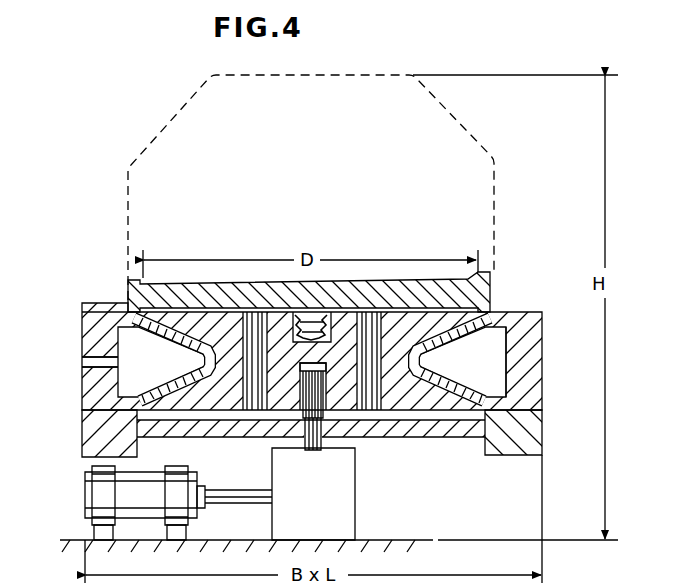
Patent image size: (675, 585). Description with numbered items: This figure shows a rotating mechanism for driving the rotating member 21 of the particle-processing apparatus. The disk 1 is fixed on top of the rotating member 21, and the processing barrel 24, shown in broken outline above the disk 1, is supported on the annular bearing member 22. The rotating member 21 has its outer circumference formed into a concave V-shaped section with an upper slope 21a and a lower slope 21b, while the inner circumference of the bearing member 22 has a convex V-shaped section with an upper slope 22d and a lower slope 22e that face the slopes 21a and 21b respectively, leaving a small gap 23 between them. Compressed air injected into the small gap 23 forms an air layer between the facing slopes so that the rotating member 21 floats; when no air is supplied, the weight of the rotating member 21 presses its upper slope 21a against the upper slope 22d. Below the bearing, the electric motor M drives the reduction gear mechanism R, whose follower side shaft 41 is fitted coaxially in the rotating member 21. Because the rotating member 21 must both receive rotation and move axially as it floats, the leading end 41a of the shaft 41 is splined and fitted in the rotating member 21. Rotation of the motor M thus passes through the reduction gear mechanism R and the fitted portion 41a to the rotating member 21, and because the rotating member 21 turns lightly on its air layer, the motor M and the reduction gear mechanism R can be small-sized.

The processing barrel 24 is at (483, 158).
The disk 1 is at (473, 281).
The bearing member 22 is at (528, 372).
The upper slope of bearing member 22d is at (490, 340).
The lower slope of bearing member 22e is at (500, 397).
The small gap 23 is at (468, 402).
The upper slope of rotating member 21a is at (381, 402).
The rotating member 21 is at (414, 402).
The lower slope of rotating member 21b is at (450, 414).
The follower side shaft 41 is at (301, 438).
The leading end of shaft 41a is at (300, 388).
The reduction gear mechanism R is at (355, 522).
The electric motor M is at (85, 492).